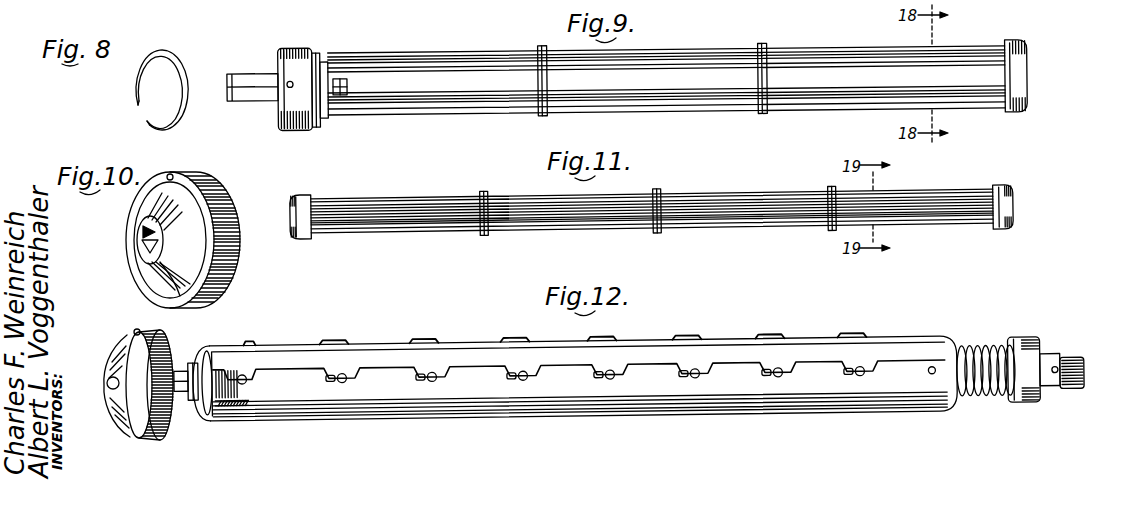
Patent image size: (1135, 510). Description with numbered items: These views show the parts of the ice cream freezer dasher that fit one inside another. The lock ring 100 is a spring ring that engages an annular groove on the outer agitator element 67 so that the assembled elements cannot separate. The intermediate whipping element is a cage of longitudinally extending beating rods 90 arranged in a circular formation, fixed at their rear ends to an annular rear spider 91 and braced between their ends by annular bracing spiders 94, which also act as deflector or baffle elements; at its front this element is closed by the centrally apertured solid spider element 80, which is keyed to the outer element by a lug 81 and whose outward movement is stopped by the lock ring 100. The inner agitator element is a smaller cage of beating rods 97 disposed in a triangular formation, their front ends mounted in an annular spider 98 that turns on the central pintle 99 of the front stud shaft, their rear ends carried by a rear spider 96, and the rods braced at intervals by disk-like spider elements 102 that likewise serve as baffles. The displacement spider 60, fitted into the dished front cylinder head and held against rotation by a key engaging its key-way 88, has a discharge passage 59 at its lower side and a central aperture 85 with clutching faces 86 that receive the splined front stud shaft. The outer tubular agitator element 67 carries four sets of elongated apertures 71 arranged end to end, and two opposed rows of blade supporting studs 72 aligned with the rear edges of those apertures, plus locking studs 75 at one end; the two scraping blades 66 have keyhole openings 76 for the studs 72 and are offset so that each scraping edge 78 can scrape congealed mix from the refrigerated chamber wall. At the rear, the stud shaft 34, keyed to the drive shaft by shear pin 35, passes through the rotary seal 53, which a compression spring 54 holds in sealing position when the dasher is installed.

In FIG. 8, the lock ring 100 is at (137, 80).
In FIG. 9, the spider element 80 is at (293, 48).
In FIG. 9, the lug 81 is at (289, 87).
In FIG. 9, the pintle 99 is at (345, 97).
In FIG. 9, the beating rods 90 is at (436, 60).
In FIG. 9, the annular bracing spiders 94 is at (541, 88).
In FIG. 9, the annular rear spider 91 is at (1012, 120).
In FIG. 10, the key-way 88 is at (172, 175).
In FIG. 12, the key-way 88 is at (136, 332).
In FIG. 10, the central aperture 85 is at (140, 233).
In FIG. 10, the clutching faces 86 is at (143, 249).
In FIG. 10, the displacement spider 60 is at (194, 252).
In FIG. 12, the displacement spider 60 is at (126, 425).
In FIG. 10, the discharge passage 59 is at (163, 288).
In FIG. 12, the discharge passage 59 is at (120, 405).
In FIG. 11, the annular spider 98 is at (306, 239).
In FIG. 11, the disk-like spider elements 102 is at (483, 238).
In FIG. 11, the beating rods 97 is at (731, 228).
In FIG. 11, the rear spider 96 is at (1000, 239).
In FIG. 12, the scraping blades 66 is at (487, 405).
In FIG. 12, the outer tubular agitator element 67 is at (462, 346).
In FIG. 12, the elongated apertures 71 is at (372, 370).
In FIG. 12, the blade supporting studs 72 is at (608, 378).
In FIG. 12, the locking studs 75 is at (930, 376).
In FIG. 12, the keyhole openings 76 is at (428, 385).
In FIG. 12, the scraping edge 78 is at (637, 415).
In FIG. 12, the compression spring 54 is at (978, 406).
In FIG. 12, the rotary seal 53 is at (1020, 348).
In FIG. 12, the stud shaft 34 is at (1054, 398).
In FIG. 12, the shear pin 35 is at (1066, 369).